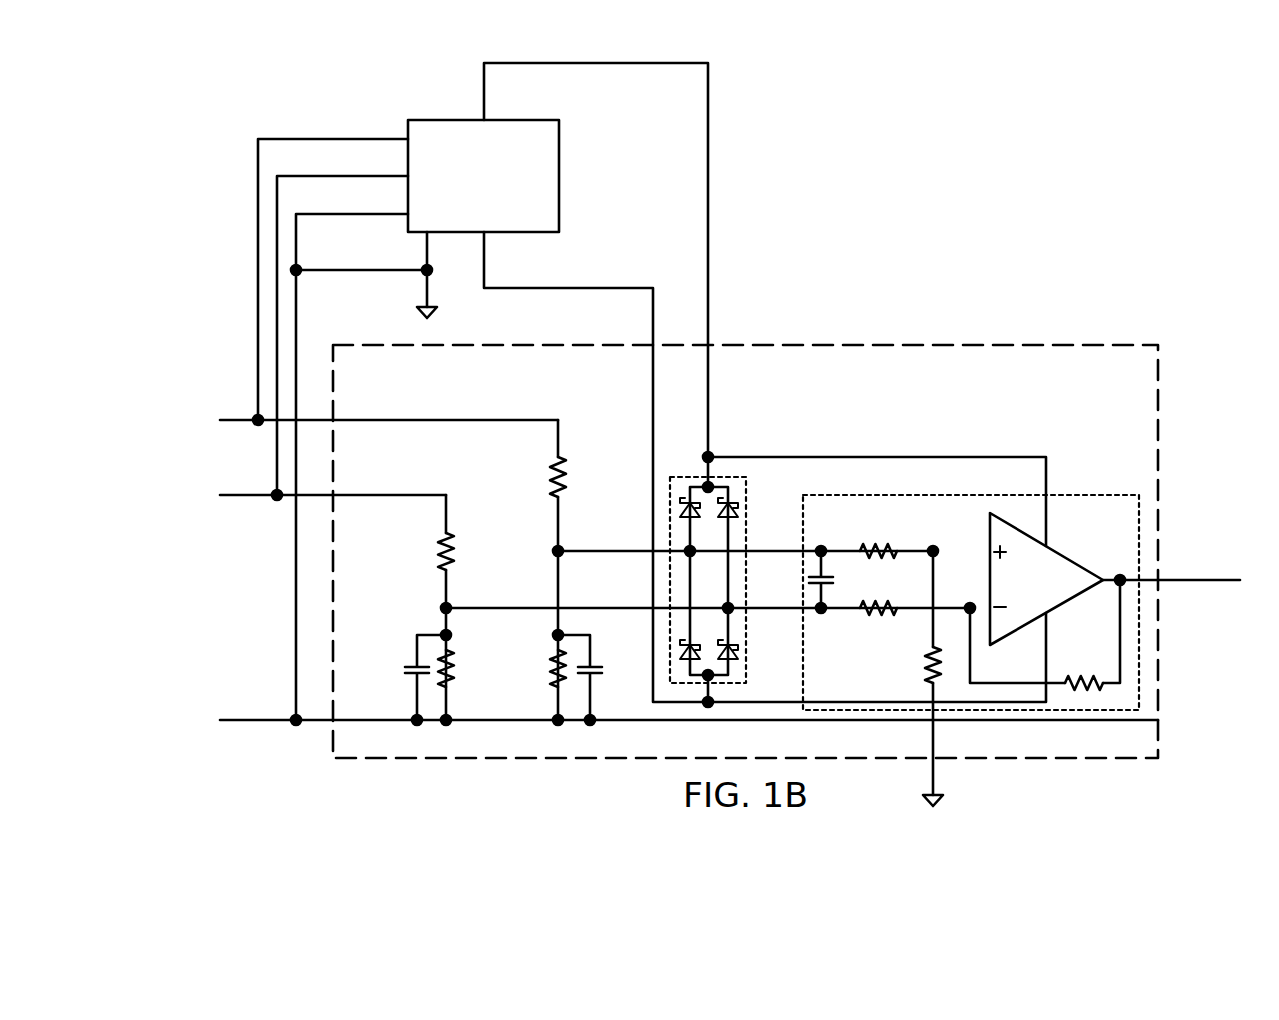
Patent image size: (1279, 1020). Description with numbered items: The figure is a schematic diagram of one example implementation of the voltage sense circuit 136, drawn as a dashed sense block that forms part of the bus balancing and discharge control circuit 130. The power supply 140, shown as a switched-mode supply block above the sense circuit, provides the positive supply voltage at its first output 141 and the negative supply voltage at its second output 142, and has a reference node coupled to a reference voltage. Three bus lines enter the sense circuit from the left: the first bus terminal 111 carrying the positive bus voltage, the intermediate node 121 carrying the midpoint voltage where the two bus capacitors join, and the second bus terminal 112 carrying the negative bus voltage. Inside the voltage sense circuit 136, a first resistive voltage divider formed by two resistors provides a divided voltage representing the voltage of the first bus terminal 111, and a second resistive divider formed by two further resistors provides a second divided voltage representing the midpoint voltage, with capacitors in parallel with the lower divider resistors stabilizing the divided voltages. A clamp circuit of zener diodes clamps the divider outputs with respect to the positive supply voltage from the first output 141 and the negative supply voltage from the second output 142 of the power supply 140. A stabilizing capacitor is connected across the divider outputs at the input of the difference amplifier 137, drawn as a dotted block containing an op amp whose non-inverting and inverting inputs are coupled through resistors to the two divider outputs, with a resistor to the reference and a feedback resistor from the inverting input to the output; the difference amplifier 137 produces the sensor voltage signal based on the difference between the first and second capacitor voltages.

The bus balancing and discharge control circuit 130 is at (233, 111).
The power supply 140 is at (425, 119).
The first output 141 is at (484, 96).
The second output 142 is at (484, 268).
The voltage sense circuit 136 is at (372, 345).
The first bus terminal 111 is at (250, 419).
The intermediate node 121 is at (250, 494).
The second bus terminal 112 is at (250, 719).
The difference amplifier 137 is at (1103, 494).